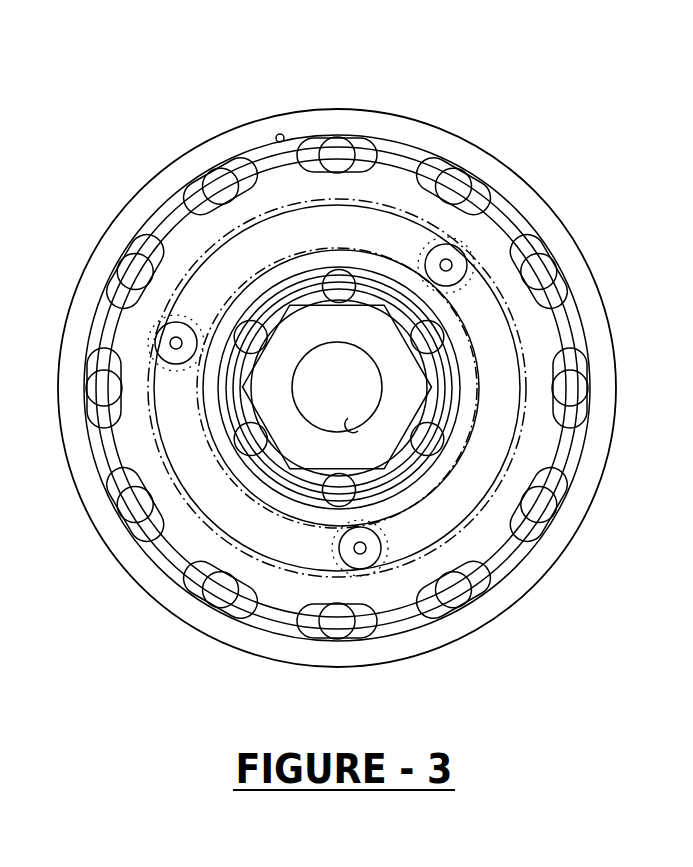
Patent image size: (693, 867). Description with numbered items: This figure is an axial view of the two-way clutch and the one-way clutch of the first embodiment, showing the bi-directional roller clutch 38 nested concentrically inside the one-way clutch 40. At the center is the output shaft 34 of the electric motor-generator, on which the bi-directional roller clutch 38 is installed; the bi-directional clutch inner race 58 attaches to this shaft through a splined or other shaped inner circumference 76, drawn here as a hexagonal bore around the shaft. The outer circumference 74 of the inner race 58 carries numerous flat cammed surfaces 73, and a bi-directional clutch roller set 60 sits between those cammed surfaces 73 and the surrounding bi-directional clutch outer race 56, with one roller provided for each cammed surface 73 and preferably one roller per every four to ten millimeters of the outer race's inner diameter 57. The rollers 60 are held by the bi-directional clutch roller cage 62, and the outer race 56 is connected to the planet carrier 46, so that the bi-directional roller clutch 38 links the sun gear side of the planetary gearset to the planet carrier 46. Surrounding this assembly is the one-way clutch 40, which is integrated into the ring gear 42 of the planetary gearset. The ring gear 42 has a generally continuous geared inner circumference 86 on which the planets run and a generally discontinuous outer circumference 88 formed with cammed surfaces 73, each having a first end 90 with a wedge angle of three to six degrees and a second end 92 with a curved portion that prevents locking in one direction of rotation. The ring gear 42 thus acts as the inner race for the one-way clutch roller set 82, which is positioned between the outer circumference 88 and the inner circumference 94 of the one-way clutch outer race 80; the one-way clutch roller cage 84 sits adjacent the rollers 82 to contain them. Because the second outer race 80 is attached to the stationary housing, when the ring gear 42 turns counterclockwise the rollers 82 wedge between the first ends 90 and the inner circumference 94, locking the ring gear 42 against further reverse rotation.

The one-way clutch 40 is at (414, 106).
The one-way clutch outer race 80 is at (207, 140).
The inner circumference 86 is at (393, 208).
The ring gear 42 is at (203, 227).
The first end 90 is at (292, 163).
The inner circumference 94 is at (279, 138).
The one-way clutch roller set 82 is at (530, 270).
The outer circumference 88 is at (368, 143).
The one-way clutch roller cage 84 is at (553, 215).
The second end 92 is at (527, 293).
The bi-directional roller clutch 38 is at (408, 263).
The bi-directional clutch inner race 58 is at (200, 440).
The bi-directional clutch outer race 56 is at (308, 250).
The inner diameter 57 is at (260, 313).
The outer circumference 74 is at (430, 402).
The cammed surfaces 73 is at (407, 440).
The bi-directional clutch roller set 60 is at (250, 437).
The planet carrier 46 is at (392, 463).
The output shaft 34 is at (292, 390).
The inner circumference 76 is at (363, 425).
The bi-directional clutch roller cage 62 is at (360, 548).